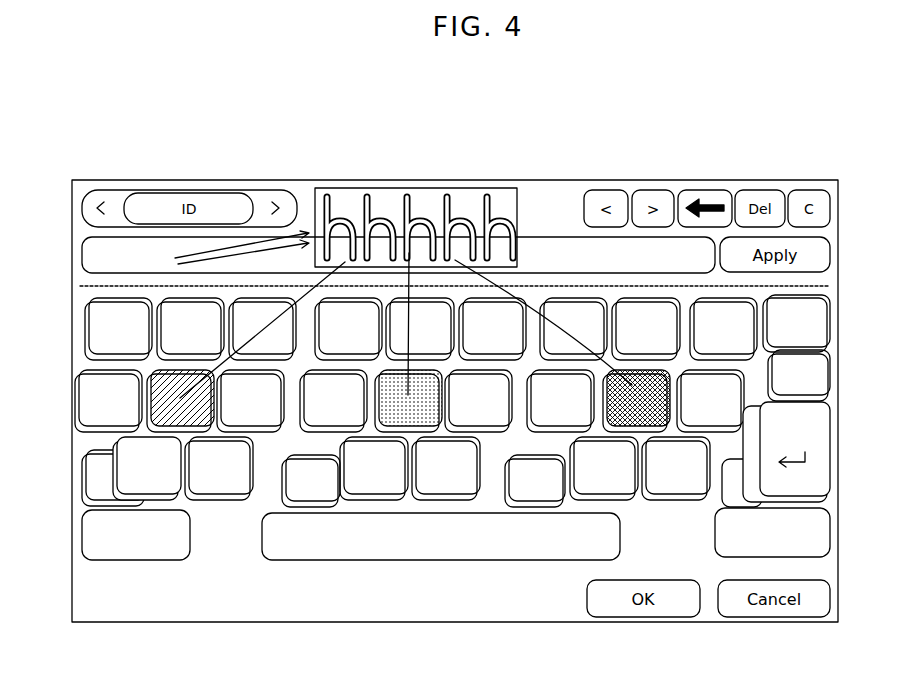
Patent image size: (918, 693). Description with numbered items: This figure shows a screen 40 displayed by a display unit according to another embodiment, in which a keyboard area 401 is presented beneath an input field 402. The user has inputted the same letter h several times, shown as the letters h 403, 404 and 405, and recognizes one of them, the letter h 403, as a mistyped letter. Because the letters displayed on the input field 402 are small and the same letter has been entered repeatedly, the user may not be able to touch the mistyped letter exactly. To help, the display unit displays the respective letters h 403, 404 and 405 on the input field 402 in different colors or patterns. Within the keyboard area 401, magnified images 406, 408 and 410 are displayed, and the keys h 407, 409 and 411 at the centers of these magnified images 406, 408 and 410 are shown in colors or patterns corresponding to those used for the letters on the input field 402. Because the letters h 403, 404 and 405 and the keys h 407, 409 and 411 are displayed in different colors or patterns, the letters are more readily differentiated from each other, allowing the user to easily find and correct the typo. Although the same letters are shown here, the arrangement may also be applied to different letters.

The virtual keyboard screen 40 is at (82, 186).
The keyboard area 401 is at (453, 457).
The input field 402 is at (562, 250).
The letter h 403 is at (418, 225).
The letter h 404 is at (378, 208).
The letter h 405 is at (455, 222).
The magnified image 406 is at (92, 413).
The key h 407 is at (85, 382).
The magnified image 408 is at (357, 482).
The key h 409 is at (397, 425).
The magnified image 410 is at (690, 486).
The key h 411 is at (603, 428).